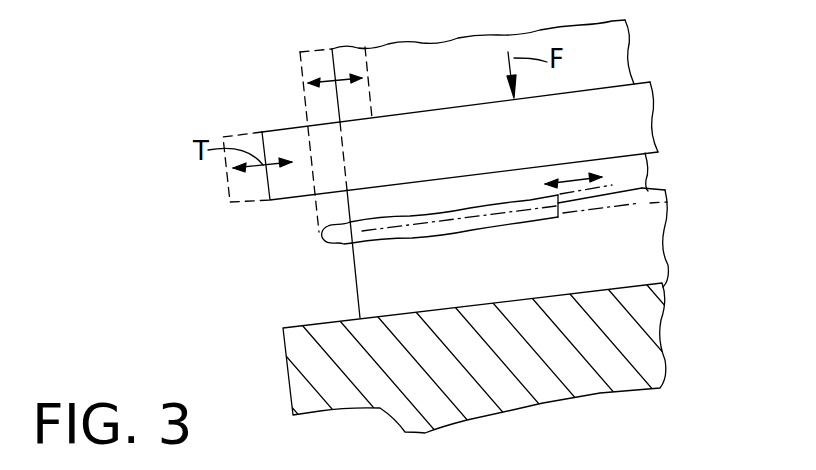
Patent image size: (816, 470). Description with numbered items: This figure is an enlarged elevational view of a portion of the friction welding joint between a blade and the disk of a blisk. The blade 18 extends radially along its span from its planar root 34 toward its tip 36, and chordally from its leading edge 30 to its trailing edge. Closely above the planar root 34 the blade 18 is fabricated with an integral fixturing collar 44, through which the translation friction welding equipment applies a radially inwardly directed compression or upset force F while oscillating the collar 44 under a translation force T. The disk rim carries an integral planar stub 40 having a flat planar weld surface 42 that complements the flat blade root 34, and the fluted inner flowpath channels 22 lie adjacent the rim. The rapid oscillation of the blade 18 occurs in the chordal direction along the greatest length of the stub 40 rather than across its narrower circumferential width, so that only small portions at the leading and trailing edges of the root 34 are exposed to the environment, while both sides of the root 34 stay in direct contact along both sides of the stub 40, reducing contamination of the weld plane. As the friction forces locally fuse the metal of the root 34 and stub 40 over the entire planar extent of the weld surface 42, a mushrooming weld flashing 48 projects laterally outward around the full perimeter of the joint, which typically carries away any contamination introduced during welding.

The blade 18 is at (484, 36).
The leading edge 30 is at (331, 60).
The fixturing collar 44 is at (571, 142).
The blade root 34 is at (627, 203).
The weld flashing 48 is at (340, 246).
The planar weld surface 42 is at (650, 191).
The planar stub 40 is at (666, 238).
The tip 36 is at (450, 289).
The inner flowpath channel 22 is at (553, 292).